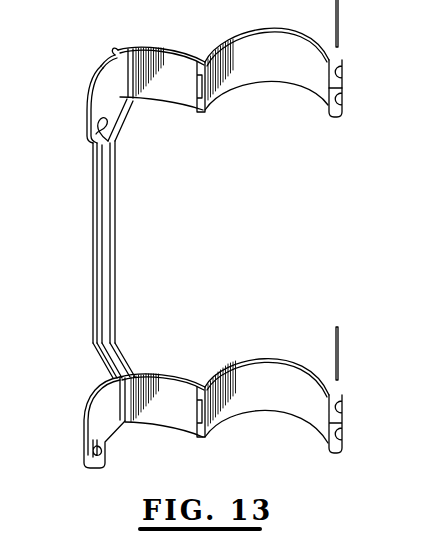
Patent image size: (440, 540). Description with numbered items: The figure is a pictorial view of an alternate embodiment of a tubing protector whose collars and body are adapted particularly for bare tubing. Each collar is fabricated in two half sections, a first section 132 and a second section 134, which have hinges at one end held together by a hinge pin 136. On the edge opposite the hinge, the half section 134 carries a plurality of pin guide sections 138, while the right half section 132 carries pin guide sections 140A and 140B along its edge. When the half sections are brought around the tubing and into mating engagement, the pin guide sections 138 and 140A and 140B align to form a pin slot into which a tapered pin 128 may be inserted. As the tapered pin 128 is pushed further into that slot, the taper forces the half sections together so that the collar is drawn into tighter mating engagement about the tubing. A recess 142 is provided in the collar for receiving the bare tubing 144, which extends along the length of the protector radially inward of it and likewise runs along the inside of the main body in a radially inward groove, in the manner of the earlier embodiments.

The tapered pin 128 is at (340, 21).
The first section 132 is at (268, 360).
The second section 134 is at (87, 106).
The hinge pin 136 is at (205, 62).
The pin guide sections 138 is at (97, 142).
The pin guide section 140A is at (342, 80).
The pin guide section 140B is at (342, 114).
The recess 142 is at (113, 52).
The bare tubing 144 is at (116, 48).